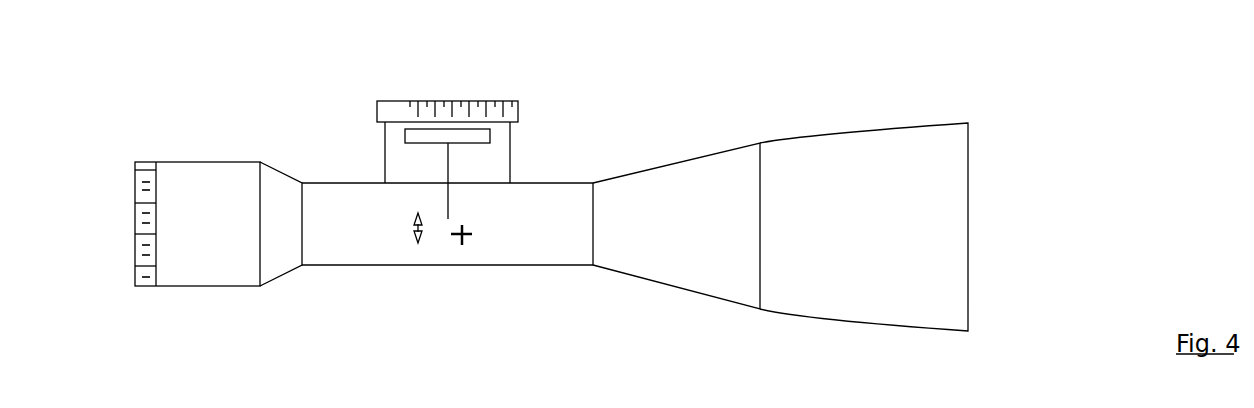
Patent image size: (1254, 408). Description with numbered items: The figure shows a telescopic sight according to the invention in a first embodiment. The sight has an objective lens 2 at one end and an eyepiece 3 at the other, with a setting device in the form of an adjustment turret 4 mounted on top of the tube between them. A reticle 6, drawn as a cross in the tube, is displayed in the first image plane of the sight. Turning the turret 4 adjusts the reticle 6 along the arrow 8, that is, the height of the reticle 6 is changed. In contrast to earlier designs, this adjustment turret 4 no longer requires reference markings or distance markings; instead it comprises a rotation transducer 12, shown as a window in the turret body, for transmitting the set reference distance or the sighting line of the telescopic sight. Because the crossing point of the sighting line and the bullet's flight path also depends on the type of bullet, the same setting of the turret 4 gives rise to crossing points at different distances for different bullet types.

The objective lens 2 is at (953, 157).
The eyepiece 3 is at (208, 180).
The turret 4 is at (510, 153).
The reticle 6 is at (462, 238).
The arrow 8 is at (410, 235).
The rotation transducer 12 is at (418, 135).